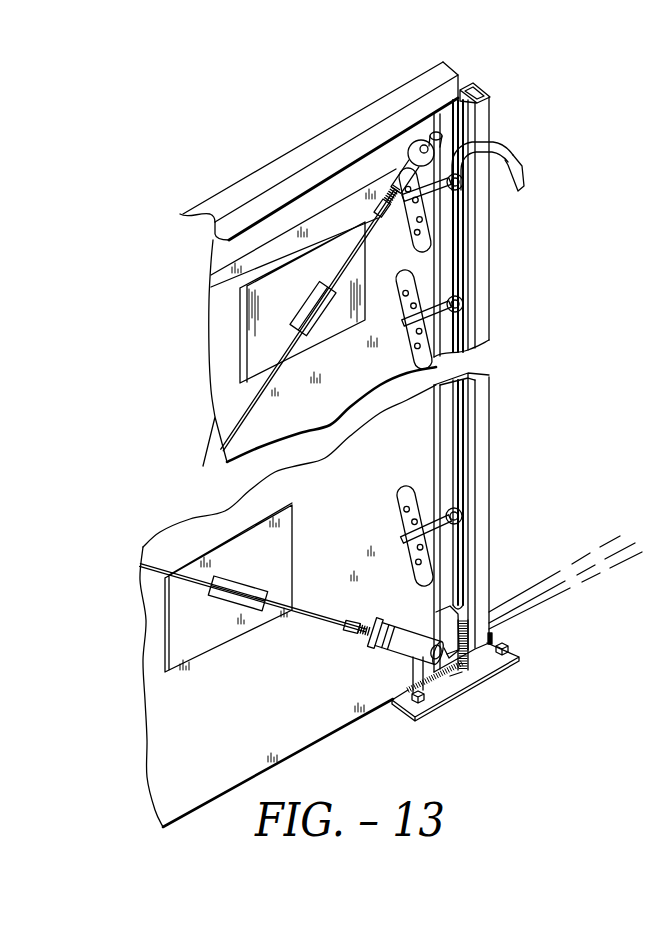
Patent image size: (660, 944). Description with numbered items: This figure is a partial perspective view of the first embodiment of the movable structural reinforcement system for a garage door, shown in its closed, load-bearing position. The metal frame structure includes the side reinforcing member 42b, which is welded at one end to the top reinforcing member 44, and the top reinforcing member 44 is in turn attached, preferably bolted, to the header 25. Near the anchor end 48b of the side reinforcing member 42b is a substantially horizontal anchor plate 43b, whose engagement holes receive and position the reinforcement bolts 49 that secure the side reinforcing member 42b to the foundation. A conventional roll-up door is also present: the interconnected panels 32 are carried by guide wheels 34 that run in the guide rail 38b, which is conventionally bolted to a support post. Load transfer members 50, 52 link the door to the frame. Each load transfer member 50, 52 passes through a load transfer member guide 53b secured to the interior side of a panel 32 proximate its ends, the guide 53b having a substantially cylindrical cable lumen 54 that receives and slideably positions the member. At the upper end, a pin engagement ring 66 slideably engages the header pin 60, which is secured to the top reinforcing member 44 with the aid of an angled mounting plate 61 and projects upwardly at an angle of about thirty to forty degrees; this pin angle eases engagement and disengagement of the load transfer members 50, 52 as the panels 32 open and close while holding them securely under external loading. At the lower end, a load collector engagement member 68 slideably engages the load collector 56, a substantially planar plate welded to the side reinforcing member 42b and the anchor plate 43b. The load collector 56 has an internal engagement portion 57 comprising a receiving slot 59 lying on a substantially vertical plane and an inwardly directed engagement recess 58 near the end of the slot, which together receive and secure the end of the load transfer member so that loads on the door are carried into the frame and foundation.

The header 25 is at (290, 152).
The panel 32 is at (222, 510).
The load transfer member guide 53b is at (240, 340).
The load transfer member 50 is at (244, 414).
The cable lumen 54 is at (308, 333).
The angled mounting plate 61 is at (392, 188).
The header pin 60 is at (410, 147).
The side reinforcing member 42b is at (491, 258).
The top reinforcing member 44 is at (483, 85).
The pin engagement ring 66 is at (493, 145).
The guide rail 38b is at (502, 147).
The guide wheel 34 is at (458, 309).
The load transfer member 52 is at (197, 584).
The load collector engagement member 68 is at (393, 647).
The receiving slot 59 is at (435, 630).
The load collector 56 is at (452, 654).
The engagement portion 57 is at (416, 672).
The engagement recess 58 is at (446, 684).
The anchor plate 43b is at (504, 668).
The reinforcement bolt 49 is at (508, 650).
The anchor end 48b is at (487, 598).